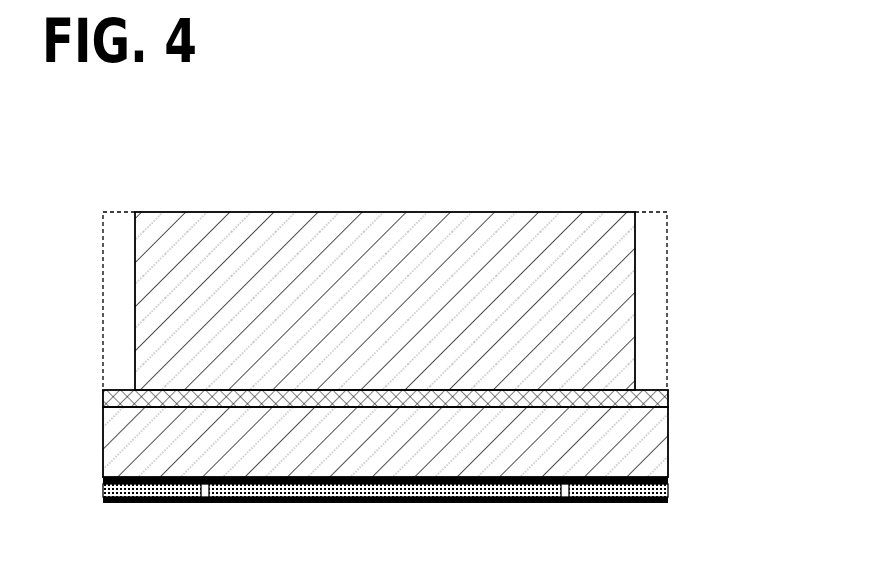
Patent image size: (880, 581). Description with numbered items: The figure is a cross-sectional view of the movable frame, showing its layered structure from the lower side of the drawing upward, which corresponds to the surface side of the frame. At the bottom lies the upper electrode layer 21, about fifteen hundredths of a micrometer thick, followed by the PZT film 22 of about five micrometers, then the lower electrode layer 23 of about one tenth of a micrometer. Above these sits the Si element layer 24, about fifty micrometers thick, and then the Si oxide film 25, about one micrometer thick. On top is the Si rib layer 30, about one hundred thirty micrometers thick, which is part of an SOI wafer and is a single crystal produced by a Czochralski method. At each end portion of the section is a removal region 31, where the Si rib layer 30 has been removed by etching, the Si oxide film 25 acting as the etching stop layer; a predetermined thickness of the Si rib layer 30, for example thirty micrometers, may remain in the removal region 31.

The upper electrode layer 21 is at (103, 501).
The PZT film 22 is at (668, 488).
The lower electrode layer 23 is at (103, 480).
The Si element layer 24 is at (668, 441).
The Si oxide film 25 is at (668, 394).
The Si rib layer 30 is at (588, 212).
The removal region 31 is at (118, 212).